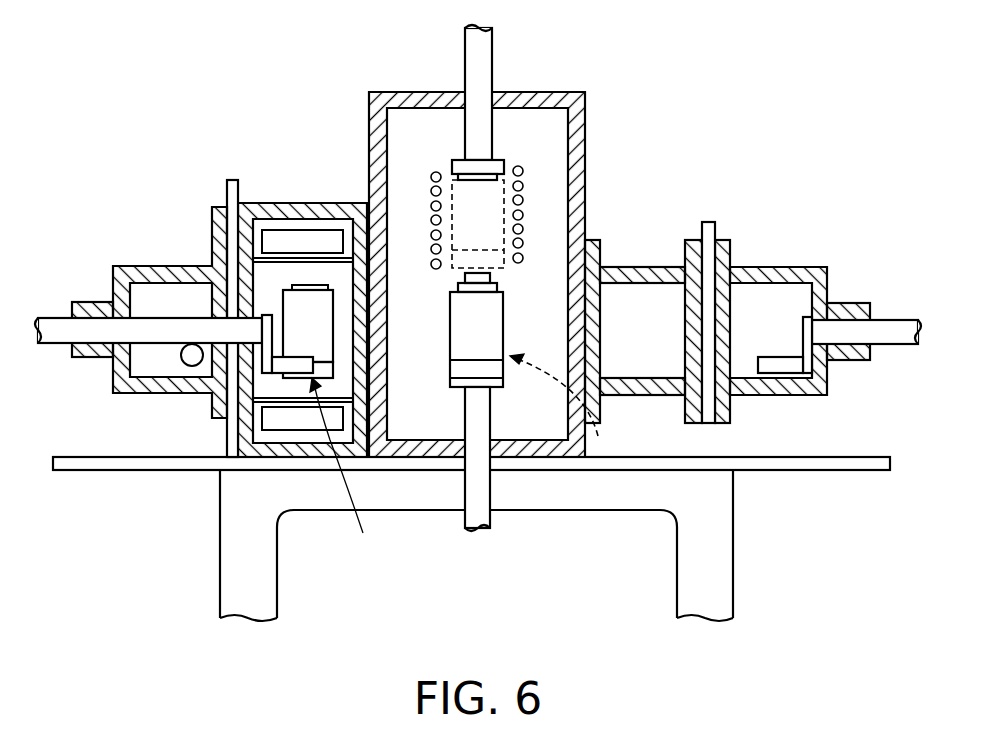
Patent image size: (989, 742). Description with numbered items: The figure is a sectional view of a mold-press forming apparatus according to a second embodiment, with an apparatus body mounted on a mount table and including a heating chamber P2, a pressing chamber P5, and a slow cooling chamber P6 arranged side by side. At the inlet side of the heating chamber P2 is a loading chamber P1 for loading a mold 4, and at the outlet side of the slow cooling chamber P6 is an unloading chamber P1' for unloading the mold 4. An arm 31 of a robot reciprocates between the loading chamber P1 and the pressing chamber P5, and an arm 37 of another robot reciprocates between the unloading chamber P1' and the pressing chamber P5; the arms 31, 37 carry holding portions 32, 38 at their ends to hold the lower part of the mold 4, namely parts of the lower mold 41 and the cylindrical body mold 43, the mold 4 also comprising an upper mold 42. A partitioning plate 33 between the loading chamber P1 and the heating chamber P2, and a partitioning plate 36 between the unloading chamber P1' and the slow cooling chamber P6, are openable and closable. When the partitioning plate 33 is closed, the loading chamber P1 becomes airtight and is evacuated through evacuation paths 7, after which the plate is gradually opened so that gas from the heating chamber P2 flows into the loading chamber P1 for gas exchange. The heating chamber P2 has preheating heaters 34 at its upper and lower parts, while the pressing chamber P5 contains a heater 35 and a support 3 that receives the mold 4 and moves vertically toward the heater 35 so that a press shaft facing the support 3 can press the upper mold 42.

The support 3 is at (505, 268).
The mold 4 is at (598, 436).
The evacuation paths 7 is at (183, 363).
The arm 31 is at (184, 332).
The holding portion 32 is at (281, 367).
The partitioning plate 33 is at (227, 184).
The preheating heaters 34 is at (268, 238).
The heater 35 is at (522, 171).
The partitioning plate 36 is at (708, 222).
The arm 37 is at (890, 320).
The holding portion 38 is at (783, 371).
The lower mold 41 is at (328, 368).
The upper mold 42 is at (297, 282).
The body mold 43 is at (312, 302).
The loading chamber P1 is at (149, 312).
The heating chamber P2 is at (260, 388).
The pressing chamber P5 is at (536, 122).
The slow cooling chamber P6 is at (655, 288).
The unloading chamber P1' is at (800, 305).